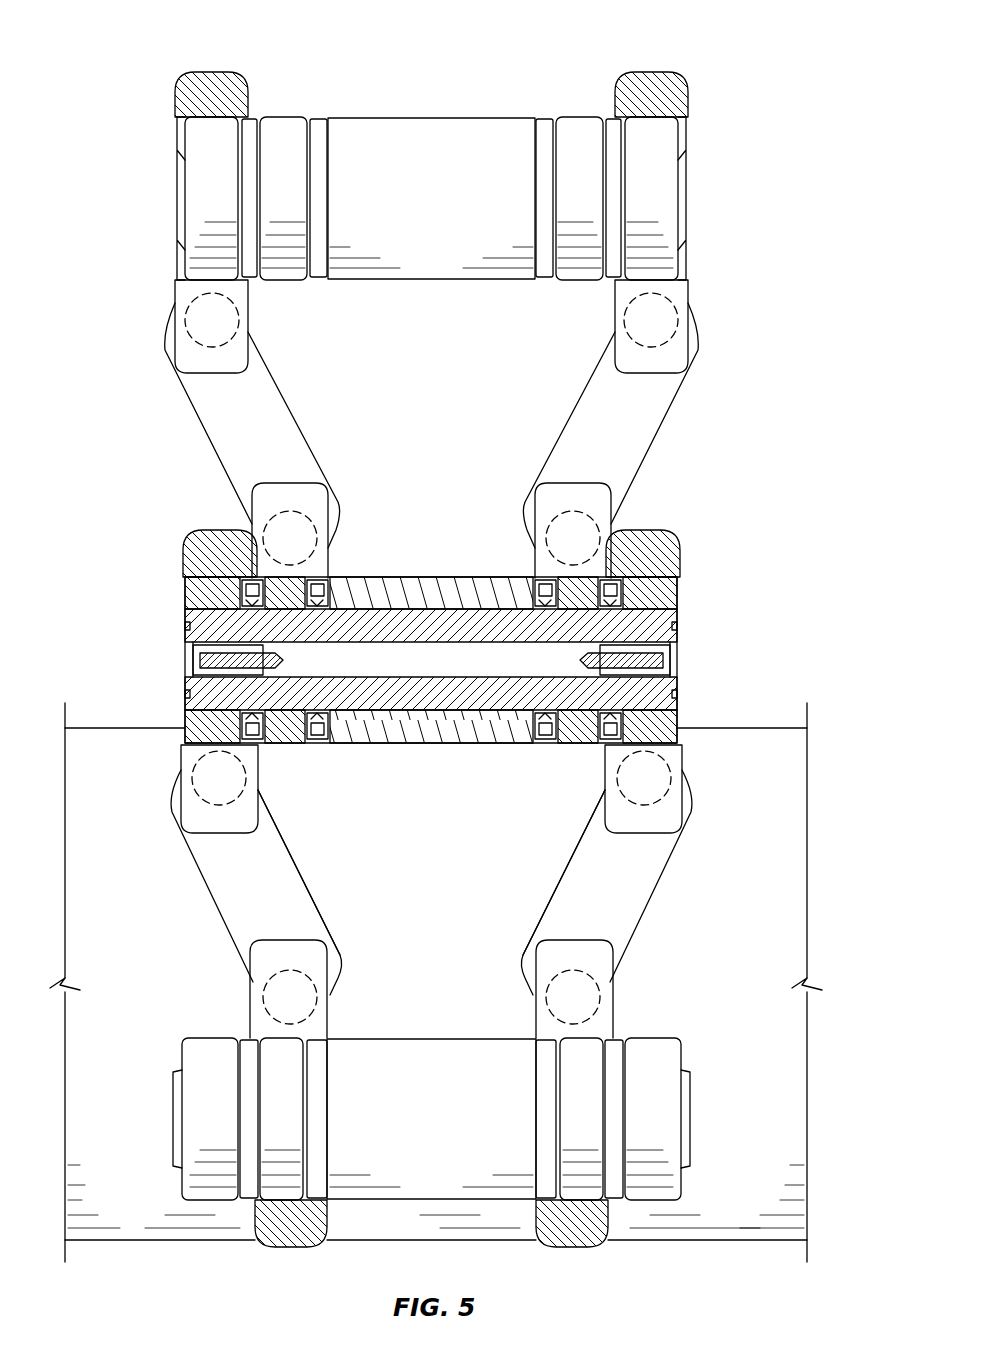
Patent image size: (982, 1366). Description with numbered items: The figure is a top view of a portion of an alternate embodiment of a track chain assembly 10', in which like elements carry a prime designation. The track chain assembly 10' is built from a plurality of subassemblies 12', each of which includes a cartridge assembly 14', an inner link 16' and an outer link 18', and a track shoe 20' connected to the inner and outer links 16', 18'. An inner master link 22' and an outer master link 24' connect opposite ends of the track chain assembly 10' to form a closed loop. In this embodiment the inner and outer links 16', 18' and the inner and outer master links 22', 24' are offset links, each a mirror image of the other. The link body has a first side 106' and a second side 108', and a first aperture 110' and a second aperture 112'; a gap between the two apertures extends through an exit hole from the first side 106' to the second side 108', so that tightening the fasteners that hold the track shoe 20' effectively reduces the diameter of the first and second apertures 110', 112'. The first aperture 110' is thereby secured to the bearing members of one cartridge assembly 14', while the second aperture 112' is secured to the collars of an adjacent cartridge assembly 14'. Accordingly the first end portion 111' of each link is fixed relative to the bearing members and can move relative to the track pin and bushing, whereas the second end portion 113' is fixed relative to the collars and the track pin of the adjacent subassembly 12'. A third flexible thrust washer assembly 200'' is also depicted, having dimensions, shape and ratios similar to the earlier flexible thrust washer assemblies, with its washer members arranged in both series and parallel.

The track chain assembly 10' is at (436, 643).
The subassembly 12' is at (695, 556).
The cartridge assembly 14' is at (431, 697).
The inner link 16' is at (470, 176).
The outer link 18' is at (145, 198).
The track shoe 20' is at (436, 963).
The inner master link 22' is at (240, 658).
The outer master link 24' is at (624, 670).
The first side 106' is at (435, 891).
The second side 108' is at (431, 872).
The first aperture 110' is at (431, 1120).
The first end portion 111' is at (431, 1238).
The second aperture 112' is at (435, 660).
The second end portion 113' is at (435, 553).
The third flexible thrust washer assembly 200'' is at (431, 659).